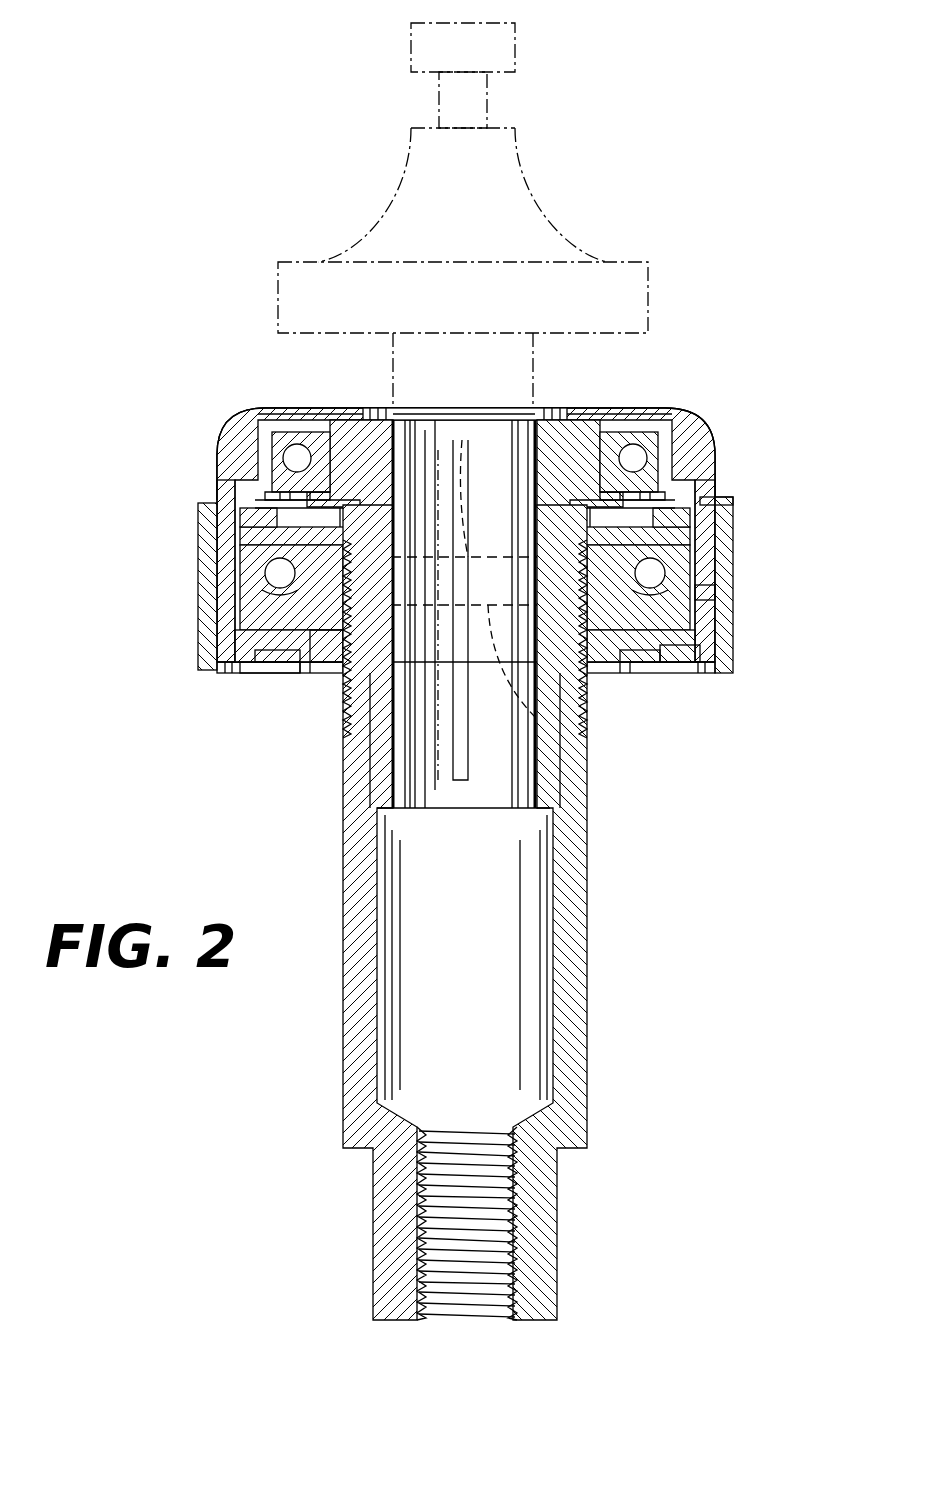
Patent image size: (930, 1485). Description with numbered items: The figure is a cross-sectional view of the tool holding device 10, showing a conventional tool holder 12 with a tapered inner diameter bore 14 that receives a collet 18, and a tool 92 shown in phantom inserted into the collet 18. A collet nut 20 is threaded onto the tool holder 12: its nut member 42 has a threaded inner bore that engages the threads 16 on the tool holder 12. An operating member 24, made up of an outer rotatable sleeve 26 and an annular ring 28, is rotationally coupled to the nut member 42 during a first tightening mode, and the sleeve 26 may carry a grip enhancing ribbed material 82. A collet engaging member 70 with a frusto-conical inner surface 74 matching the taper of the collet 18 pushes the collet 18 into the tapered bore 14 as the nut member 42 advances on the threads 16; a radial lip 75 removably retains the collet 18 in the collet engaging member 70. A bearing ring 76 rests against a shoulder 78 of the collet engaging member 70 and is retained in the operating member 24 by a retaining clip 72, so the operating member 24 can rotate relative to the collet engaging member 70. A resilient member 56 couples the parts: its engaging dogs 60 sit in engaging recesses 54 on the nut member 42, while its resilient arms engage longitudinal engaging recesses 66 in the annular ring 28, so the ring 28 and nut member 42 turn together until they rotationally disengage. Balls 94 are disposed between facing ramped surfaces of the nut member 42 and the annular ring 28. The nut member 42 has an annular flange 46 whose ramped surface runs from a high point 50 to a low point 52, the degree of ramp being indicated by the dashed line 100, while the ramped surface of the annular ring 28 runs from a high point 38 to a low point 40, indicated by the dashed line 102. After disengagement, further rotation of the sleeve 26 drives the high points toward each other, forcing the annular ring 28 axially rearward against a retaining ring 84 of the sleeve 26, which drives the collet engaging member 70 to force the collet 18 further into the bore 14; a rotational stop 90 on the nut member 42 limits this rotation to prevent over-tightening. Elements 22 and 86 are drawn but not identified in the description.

The tool holding device 10 is at (90, 393).
The tool holder 12 is at (585, 888).
The tapered inner diameter bore 14 is at (380, 738).
The threads 16 is at (582, 704).
The collet 18 is at (562, 455).
The collet nut 20 is at (712, 398).
The outer ring 22 is at (218, 537).
The operating member 24 is at (172, 669).
The outer rotatable sleeve 26 is at (214, 468).
The annular ring 28 is at (255, 619).
The high point 38 is at (652, 582).
The low point 40 is at (278, 575).
The nut member 42 is at (734, 503).
The annular flange 46 is at (734, 593).
The high point 50 is at (735, 552).
The low point 52 is at (222, 567).
The engaging recesses 54 is at (300, 652).
The resilient member 56 is at (668, 664).
The engaging dogs 60 is at (268, 675).
The longitudinal engaging recesses 66 is at (735, 650).
The collet engaging member 70 is at (345, 456).
The retaining clip 72 is at (640, 502).
The frusto-conical inner diameter surface 74 is at (403, 432).
The radial lip 75 is at (469, 545).
The bearing ring 76 is at (292, 440).
The shoulder 78 is at (612, 440).
The ribbed material 82 is at (735, 565).
The retaining ring 84 is at (716, 672).
The seal 86 is at (232, 674).
The rotational stop 90 is at (266, 523).
The tool 92 is at (525, 205).
The balls 94 is at (636, 663).
The dashed line 100 is at (466, 410).
The dashed line 102 is at (578, 742).